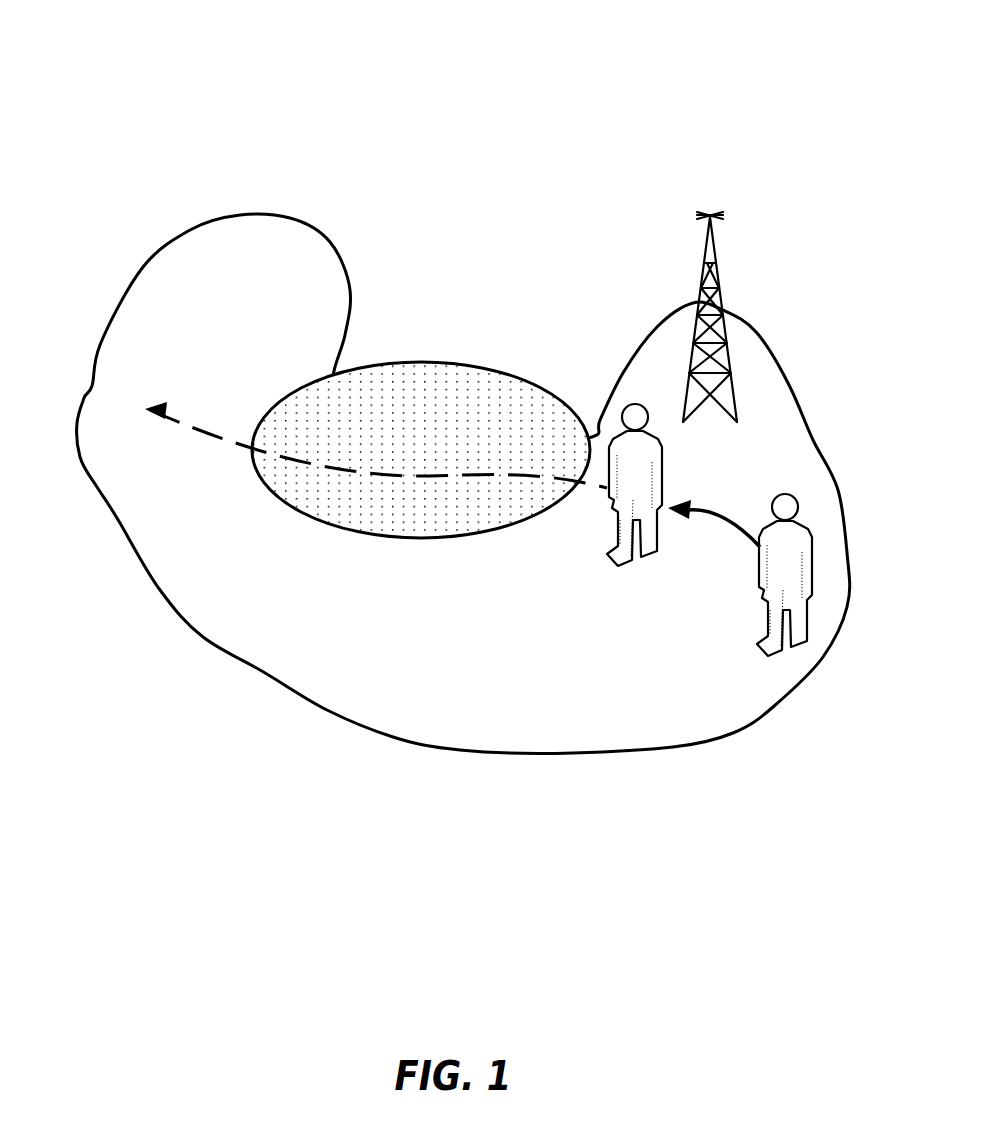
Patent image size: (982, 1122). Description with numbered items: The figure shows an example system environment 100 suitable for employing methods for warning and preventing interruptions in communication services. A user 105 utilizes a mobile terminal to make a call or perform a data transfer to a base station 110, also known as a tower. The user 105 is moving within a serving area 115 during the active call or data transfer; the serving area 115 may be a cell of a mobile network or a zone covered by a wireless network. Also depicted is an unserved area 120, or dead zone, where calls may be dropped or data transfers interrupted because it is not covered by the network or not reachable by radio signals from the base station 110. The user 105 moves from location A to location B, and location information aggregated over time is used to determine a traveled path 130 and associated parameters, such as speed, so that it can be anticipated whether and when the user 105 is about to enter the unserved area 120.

The system environment 100 is at (804, 65).
The user 105 is at (597, 528).
The base station 110 is at (730, 245).
The serving area 115 is at (270, 653).
The unserved area 120 is at (439, 378).
The traveled path 130 is at (728, 533).